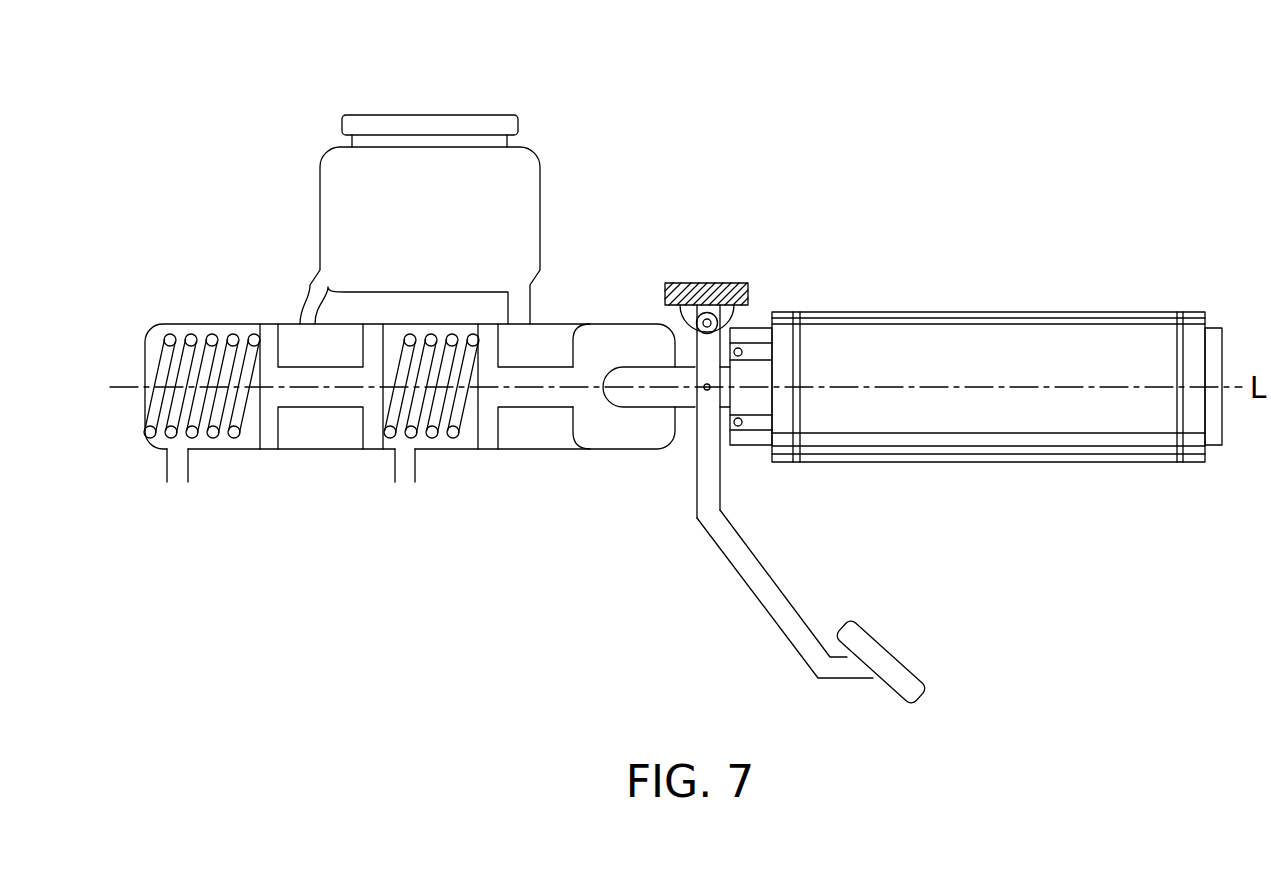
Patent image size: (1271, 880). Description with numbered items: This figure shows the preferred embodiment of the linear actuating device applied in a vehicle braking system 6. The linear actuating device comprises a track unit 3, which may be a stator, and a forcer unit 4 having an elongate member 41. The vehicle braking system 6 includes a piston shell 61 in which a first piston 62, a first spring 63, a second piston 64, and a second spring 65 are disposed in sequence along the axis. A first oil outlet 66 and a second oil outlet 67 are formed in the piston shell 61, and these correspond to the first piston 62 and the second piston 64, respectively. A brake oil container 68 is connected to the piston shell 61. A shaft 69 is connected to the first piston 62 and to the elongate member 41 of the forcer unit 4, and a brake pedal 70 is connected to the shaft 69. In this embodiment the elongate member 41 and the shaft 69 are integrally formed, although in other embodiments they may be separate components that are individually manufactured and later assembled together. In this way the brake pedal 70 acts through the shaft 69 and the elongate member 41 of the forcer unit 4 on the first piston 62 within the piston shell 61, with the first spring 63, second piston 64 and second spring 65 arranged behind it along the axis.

The track unit 3 is at (998, 312).
The forcer unit 4 is at (722, 420).
The elongate member 41 is at (726, 378).
The vehicle braking system 6 is at (541, 130).
The piston shell 61 is at (239, 324).
The first piston 62 is at (531, 397).
The first spring 63 is at (470, 357).
The second piston 64 is at (313, 397).
The second spring 65 is at (193, 324).
The first oil outlet 66 is at (402, 478).
The second oil outlet 67 is at (176, 475).
The brake oil container 68 is at (330, 170).
The shaft 69 is at (625, 398).
The brake pedal 70 is at (760, 606).